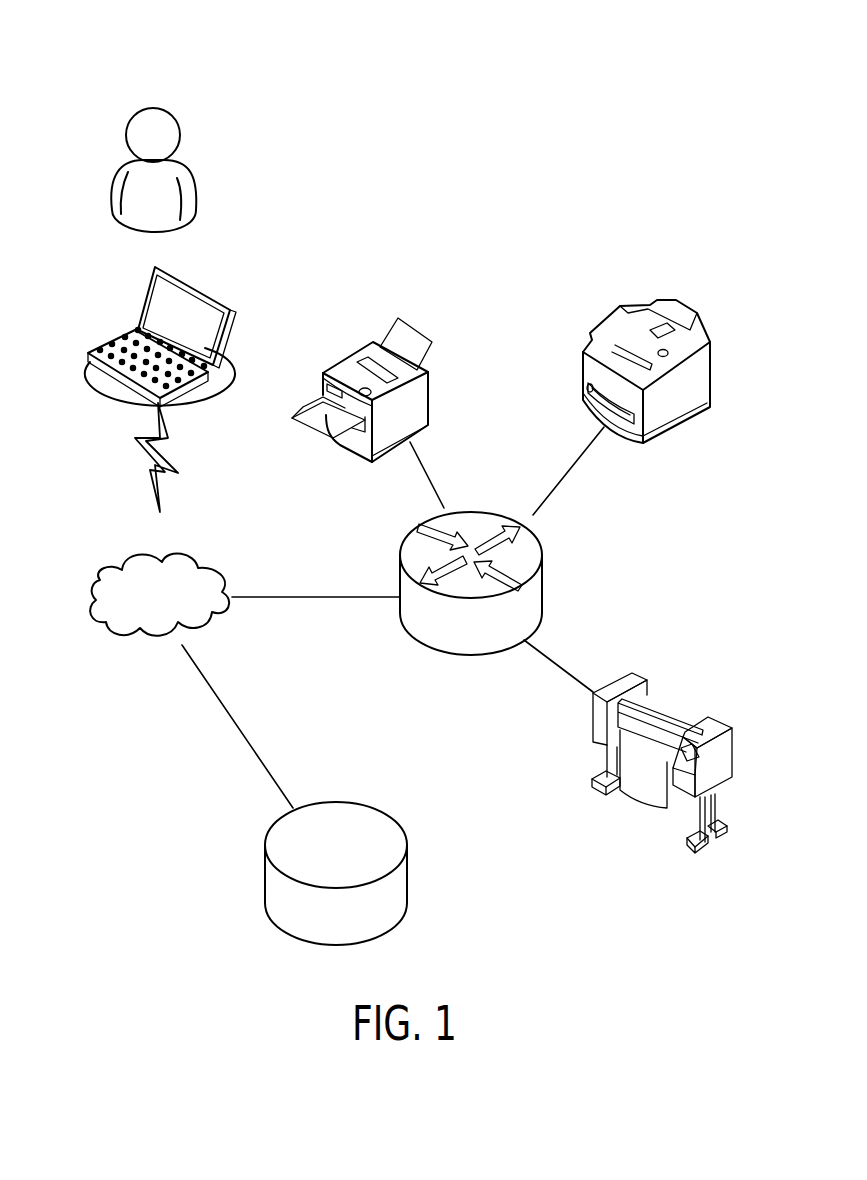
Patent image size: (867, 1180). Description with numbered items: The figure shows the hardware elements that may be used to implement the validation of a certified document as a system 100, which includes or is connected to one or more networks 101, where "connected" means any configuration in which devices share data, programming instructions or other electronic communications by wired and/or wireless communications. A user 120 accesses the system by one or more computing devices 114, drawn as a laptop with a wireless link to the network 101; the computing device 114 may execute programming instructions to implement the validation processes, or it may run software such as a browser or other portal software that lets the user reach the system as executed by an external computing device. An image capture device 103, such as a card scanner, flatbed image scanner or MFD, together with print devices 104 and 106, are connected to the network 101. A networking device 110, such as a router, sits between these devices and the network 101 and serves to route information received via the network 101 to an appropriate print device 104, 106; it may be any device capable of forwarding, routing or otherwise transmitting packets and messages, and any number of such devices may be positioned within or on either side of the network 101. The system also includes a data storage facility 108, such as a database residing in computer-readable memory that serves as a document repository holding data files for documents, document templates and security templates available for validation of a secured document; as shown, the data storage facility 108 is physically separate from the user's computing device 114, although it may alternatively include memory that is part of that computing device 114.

The system 100 is at (256, 102).
The user 120 is at (128, 127).
The computing device 114 is at (146, 293).
The image capture device 103 is at (326, 368).
The print device 104 is at (585, 333).
The networking device 110 is at (543, 570).
The network 101 is at (100, 580).
The data storage facility 108 is at (265, 845).
The print device 106 is at (713, 717).